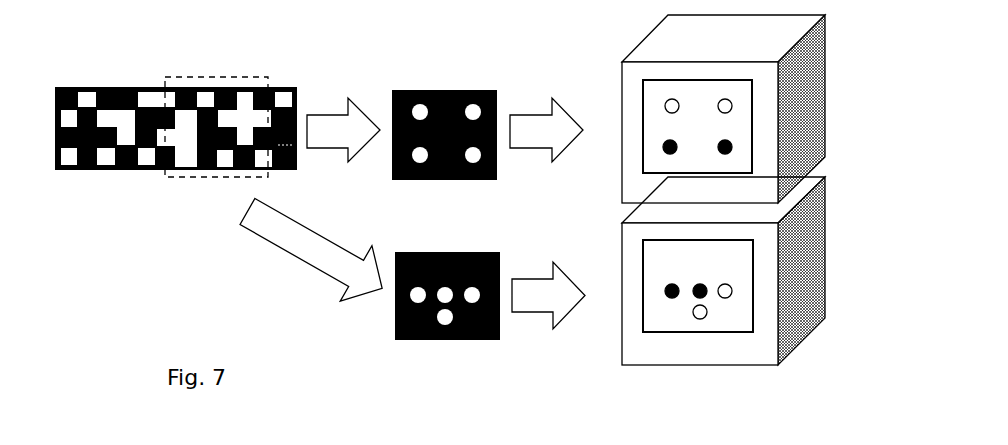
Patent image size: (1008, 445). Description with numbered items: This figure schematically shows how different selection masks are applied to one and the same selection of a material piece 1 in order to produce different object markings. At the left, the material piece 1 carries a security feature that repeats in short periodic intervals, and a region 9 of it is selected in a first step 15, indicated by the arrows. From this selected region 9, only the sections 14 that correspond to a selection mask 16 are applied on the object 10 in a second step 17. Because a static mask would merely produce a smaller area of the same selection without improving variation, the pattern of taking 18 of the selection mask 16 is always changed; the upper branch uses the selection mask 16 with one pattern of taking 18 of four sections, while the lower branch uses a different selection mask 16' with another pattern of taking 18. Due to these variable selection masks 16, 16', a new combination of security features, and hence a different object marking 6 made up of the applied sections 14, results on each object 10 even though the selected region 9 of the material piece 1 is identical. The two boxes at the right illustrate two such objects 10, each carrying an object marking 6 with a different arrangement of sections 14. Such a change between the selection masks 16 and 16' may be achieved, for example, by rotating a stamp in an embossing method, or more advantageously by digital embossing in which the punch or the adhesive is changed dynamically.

The material piece 1 is at (118, 172).
The selected region 9 is at (220, 178).
The first step 15 is at (340, 140).
The selection mask 16 is at (444, 158).
The selection mask 16' is at (447, 320).
The pattern of taking 18 is at (474, 112).
The second step 17 is at (547, 142).
The object 10 is at (627, 170).
The object marking 6 is at (687, 90).
The sections 14 is at (730, 145).